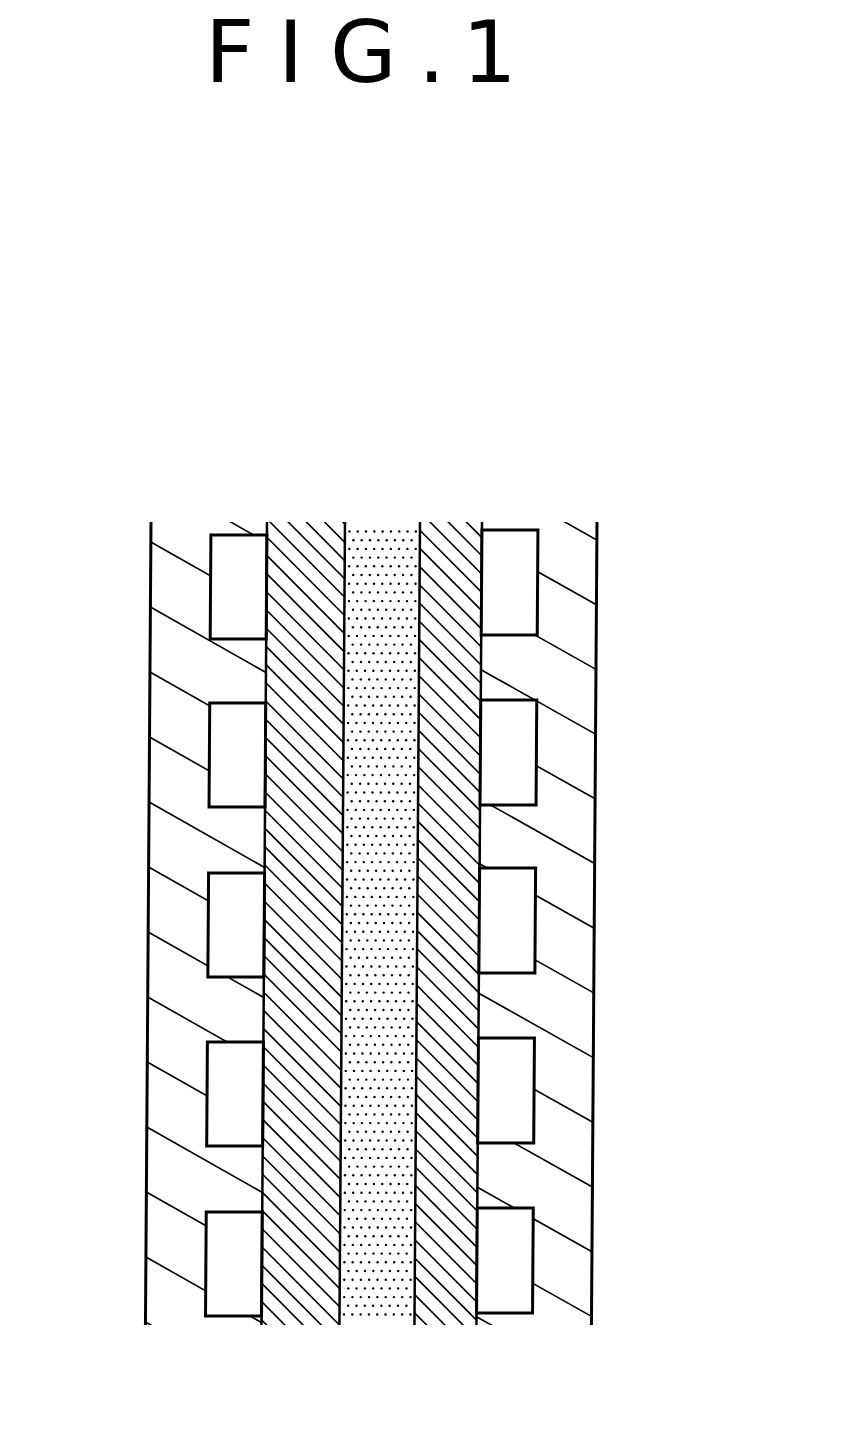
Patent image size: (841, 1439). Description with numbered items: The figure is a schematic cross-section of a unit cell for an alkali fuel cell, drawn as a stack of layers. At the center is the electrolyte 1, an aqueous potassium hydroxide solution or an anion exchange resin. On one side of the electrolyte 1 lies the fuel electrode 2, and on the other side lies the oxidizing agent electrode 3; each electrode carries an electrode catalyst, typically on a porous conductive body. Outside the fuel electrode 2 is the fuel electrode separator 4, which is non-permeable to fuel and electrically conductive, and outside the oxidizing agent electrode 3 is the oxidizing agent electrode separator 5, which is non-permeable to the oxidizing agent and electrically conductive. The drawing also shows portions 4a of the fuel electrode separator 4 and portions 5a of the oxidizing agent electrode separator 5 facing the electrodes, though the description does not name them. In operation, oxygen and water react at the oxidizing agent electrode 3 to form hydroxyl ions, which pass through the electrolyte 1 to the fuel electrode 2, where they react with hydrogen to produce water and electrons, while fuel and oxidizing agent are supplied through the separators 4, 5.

The electrolyte 1 is at (385, 547).
The fuel electrode 2 is at (307, 547).
The oxidizing agent electrode 3 is at (450, 552).
The fuel electrode separator 4 is at (187, 550).
The anode separator ribs 4a is at (233, 777).
The oxidizing agent electrode separator 5 is at (563, 550).
The cathode separator ribs 5a is at (515, 940).